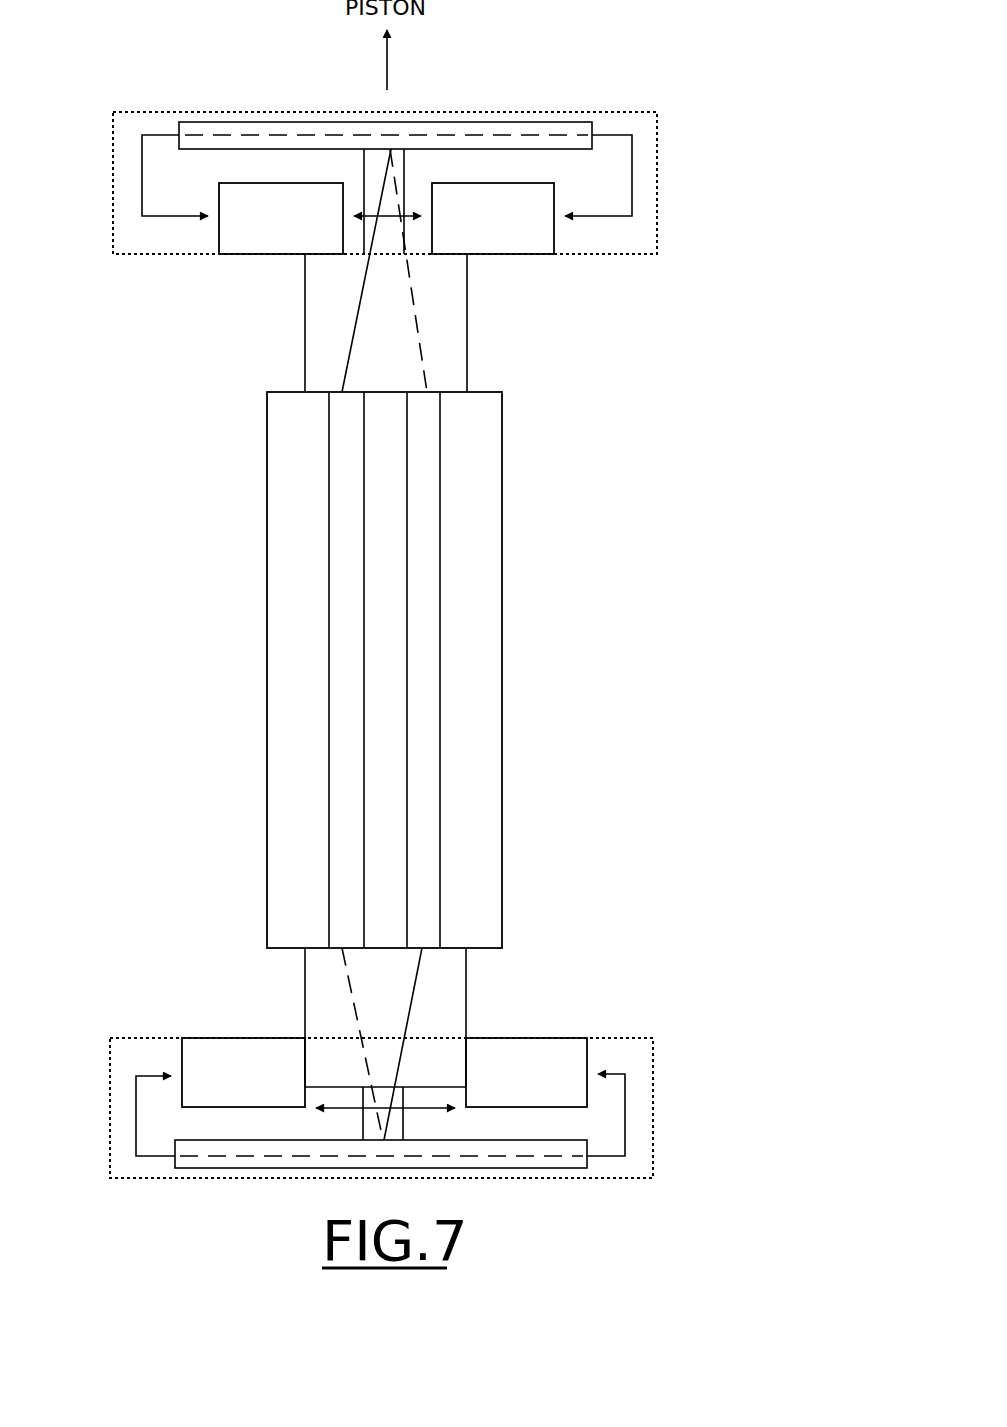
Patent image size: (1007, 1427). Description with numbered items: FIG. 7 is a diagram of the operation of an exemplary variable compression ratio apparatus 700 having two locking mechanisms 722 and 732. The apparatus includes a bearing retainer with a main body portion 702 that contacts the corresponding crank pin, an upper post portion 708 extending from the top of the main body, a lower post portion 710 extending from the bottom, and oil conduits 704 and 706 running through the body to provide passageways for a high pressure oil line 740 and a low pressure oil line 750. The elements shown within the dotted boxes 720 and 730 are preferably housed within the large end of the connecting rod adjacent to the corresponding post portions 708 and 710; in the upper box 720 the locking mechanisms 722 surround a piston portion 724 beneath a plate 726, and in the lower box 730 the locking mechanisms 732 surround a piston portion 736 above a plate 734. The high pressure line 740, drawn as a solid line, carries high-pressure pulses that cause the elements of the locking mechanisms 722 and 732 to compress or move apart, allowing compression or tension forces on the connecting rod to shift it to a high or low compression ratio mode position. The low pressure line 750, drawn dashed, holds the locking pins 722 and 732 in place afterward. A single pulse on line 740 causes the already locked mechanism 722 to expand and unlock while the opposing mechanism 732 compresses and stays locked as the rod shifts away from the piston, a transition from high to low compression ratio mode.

The brake actuator system 700 is at (814, 88).
The main body portion 702 is at (502, 528).
The oil conduit 704 is at (433, 743).
The oil conduit 706 is at (333, 716).
The upper post portion 708 is at (467, 357).
The lower post portion 710 is at (466, 982).
The box 720 is at (658, 130).
The locking mechanism 722 is at (240, 256).
The upper piston 724 is at (364, 166).
The upper plate 726 is at (548, 122).
The box 730 is at (653, 1131).
The locking mechanism 732 is at (220, 1038).
The lower plate 734 is at (307, 1170).
The lower piston 736 is at (405, 1122).
The high pressure oil line 740 is at (142, 173).
The low pressure oil line 750 is at (418, 133).